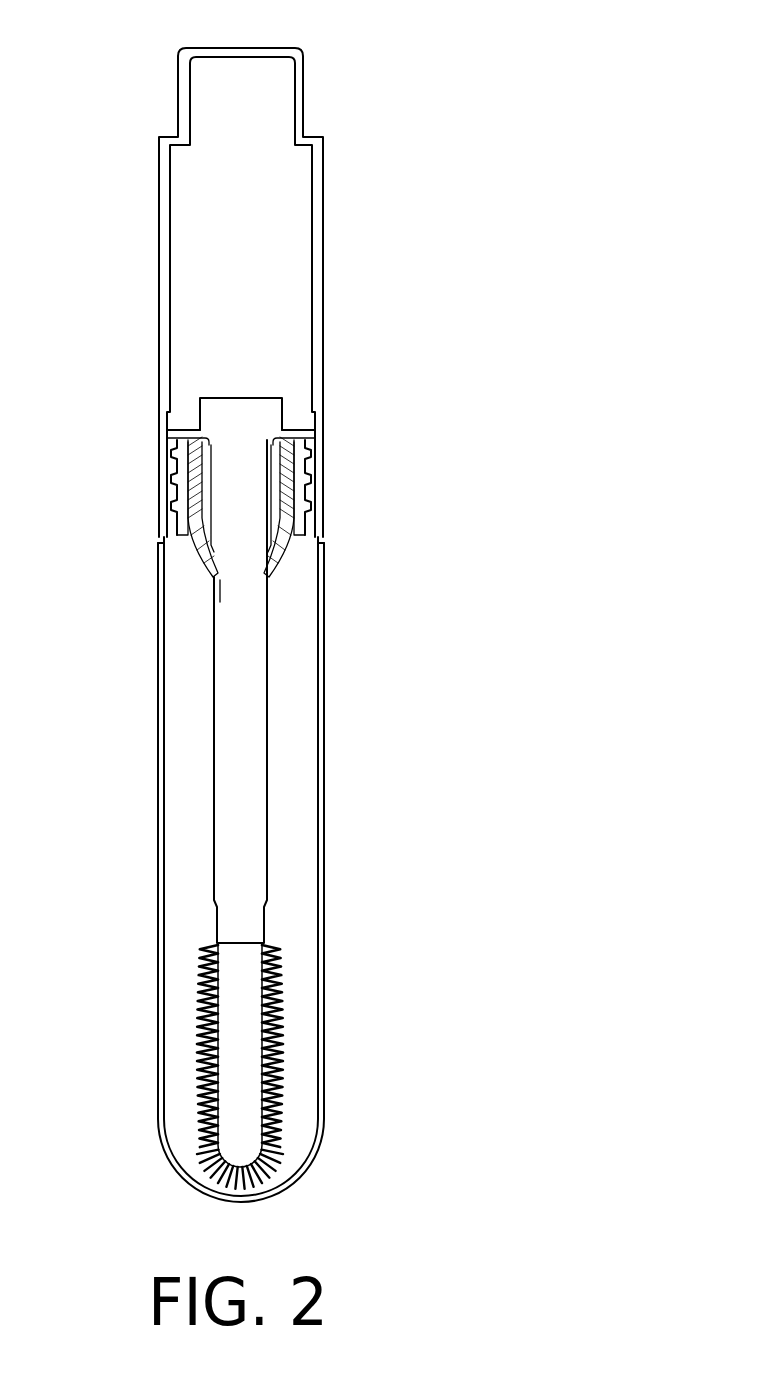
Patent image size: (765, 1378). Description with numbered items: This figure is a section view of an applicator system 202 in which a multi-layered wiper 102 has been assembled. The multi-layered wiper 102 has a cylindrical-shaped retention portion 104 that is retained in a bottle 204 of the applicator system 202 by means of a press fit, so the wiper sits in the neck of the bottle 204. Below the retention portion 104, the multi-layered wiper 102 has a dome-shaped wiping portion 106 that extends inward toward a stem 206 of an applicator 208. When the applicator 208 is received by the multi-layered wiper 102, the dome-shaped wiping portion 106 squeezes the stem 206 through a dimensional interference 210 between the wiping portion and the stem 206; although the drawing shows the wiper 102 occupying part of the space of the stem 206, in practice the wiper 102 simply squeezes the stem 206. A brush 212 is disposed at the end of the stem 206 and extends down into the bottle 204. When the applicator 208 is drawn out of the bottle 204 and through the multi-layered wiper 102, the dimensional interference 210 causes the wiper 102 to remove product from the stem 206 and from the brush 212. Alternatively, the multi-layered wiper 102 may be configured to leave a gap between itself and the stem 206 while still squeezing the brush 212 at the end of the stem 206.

The applicator system 202 is at (125, 28).
The multi-layered wiper 102 is at (202, 559).
The cylindrical-shaped retention portion 104 is at (298, 473).
The bottle 204 is at (307, 502).
The dome-shaped wiping portion 106 is at (320, 533).
The stem 206 is at (267, 610).
The applicator 208 is at (213, 738).
The dimensional interference 210 is at (255, 591).
The brush 212 is at (200, 1048).